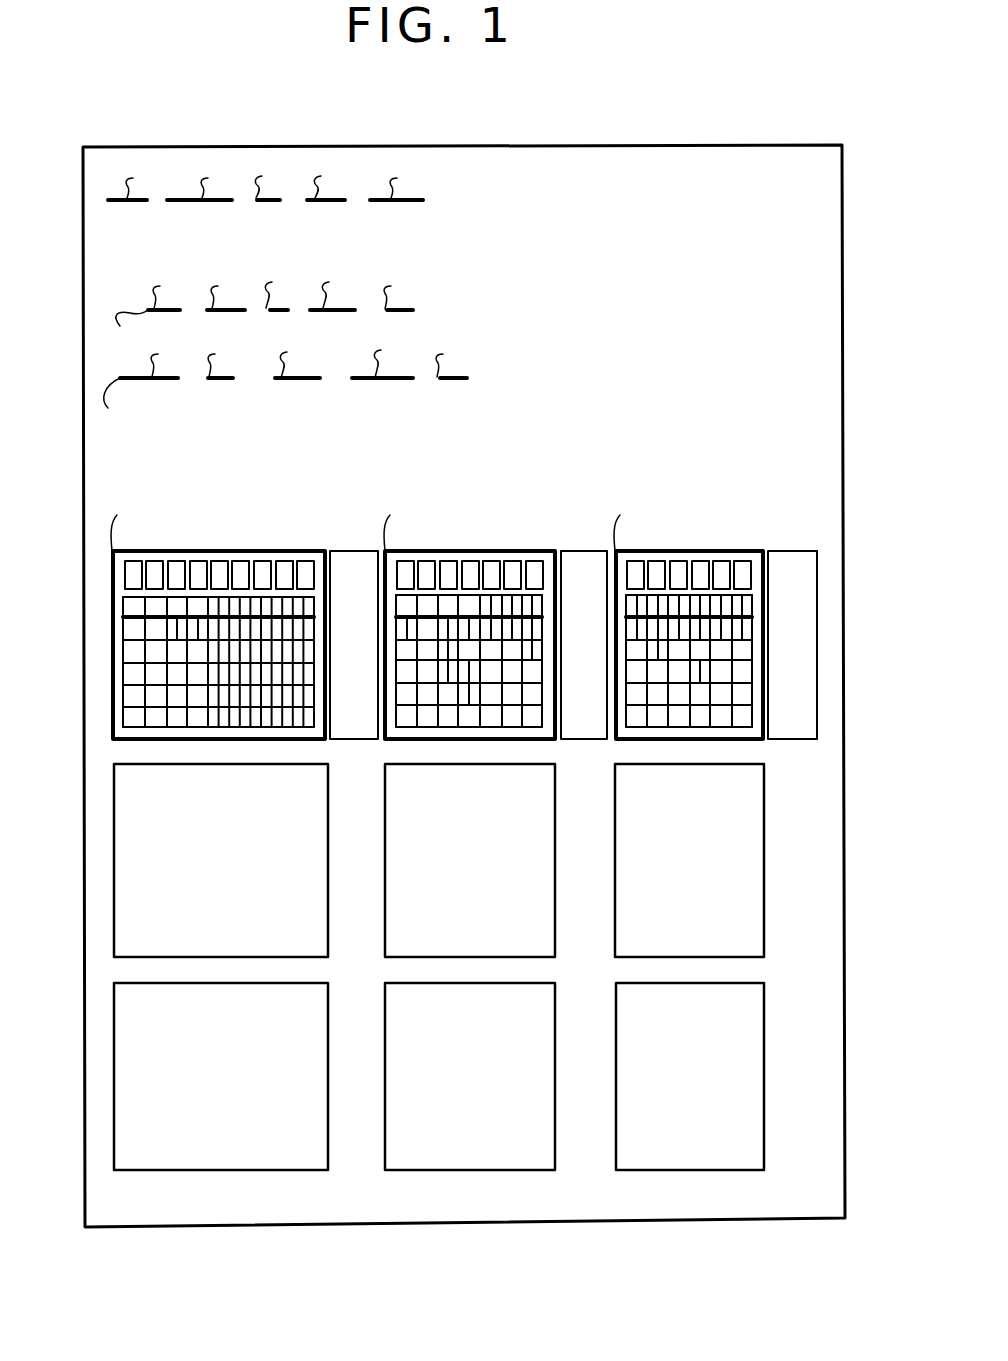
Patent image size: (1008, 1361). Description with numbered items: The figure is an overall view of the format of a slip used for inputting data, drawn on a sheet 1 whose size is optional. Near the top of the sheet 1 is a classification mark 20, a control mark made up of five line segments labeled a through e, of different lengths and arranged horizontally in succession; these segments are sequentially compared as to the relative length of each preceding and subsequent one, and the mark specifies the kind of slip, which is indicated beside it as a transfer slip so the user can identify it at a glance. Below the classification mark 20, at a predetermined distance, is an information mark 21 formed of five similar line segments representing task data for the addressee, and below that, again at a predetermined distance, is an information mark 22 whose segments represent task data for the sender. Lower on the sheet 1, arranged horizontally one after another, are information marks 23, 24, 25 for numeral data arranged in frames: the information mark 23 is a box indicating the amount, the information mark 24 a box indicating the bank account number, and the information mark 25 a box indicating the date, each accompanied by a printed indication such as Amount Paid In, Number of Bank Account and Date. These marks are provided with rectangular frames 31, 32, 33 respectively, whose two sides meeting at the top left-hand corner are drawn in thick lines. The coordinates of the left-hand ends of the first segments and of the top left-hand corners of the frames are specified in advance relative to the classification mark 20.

The sheet of the slip 1 is at (106, 360).
The classification mark 20 is at (386, 180).
The information mark 21 is at (372, 290).
The information mark 22 is at (420, 362).
The information mark 23 is at (226, 621).
The information mark 24 is at (486, 646).
The information mark 25 is at (694, 646).
The rectangular frame 31 is at (112, 632).
The rectangular frame 32 is at (415, 740).
The rectangular frame 33 is at (642, 739).